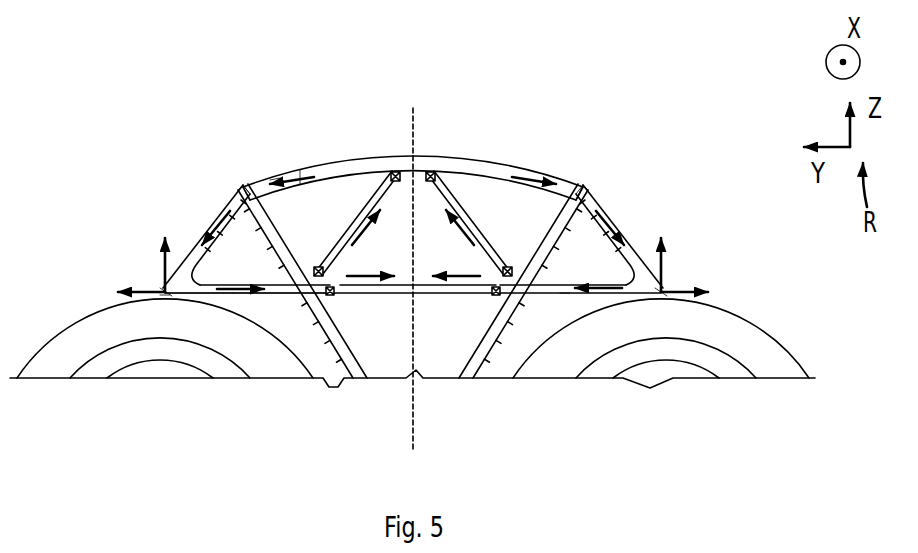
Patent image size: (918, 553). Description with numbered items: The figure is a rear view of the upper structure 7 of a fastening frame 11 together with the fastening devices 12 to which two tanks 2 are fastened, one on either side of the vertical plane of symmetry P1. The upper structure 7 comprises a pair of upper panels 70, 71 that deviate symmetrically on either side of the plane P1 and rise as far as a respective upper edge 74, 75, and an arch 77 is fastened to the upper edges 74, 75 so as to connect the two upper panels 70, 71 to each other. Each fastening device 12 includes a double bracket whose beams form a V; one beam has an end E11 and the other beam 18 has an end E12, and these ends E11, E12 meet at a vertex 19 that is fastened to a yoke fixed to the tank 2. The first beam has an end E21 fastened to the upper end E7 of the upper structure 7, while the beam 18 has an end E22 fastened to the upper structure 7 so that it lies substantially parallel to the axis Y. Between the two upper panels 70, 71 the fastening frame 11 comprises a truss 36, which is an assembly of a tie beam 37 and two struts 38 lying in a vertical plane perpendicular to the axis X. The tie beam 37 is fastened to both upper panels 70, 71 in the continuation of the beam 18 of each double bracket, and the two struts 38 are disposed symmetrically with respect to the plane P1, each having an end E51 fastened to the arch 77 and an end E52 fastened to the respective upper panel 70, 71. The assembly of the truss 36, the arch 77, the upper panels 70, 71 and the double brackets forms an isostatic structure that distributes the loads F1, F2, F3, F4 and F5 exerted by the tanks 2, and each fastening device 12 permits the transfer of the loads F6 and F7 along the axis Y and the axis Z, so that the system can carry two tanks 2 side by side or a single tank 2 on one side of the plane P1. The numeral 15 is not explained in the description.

The tank 2 is at (80, 330).
The upper structure 7 is at (505, 126).
The fastening frame 11 is at (625, 173).
The fastening device 12 is at (192, 231).
The bearing point 15 is at (157, 286).
The beam 18 is at (557, 292).
The vertex 19 is at (167, 292).
The truss 36 is at (440, 153).
The tie beam 37 is at (379, 292).
The strut 38 is at (322, 182).
The upper panel 70 is at (338, 350).
The upper panel 71 is at (489, 350).
The upper edge 74 is at (248, 186).
The upper edge 75 is at (588, 184).
The arch 77 is at (353, 165).
The upper end E7 is at (278, 167).
The end E11 is at (160, 284).
The end E12 is at (192, 292).
The end E21 is at (230, 196).
The end E22 is at (293, 292).
The end E51 is at (390, 180).
The end E52 is at (314, 266).
The load F1 is at (233, 190).
The load F2 is at (233, 292).
The load F3 is at (301, 172).
The load F4 is at (368, 292).
The load F5 is at (377, 238).
The load F6 is at (157, 279).
The load F7 is at (157, 284).
The vertical plane of symmetry P1 is at (415, 407).